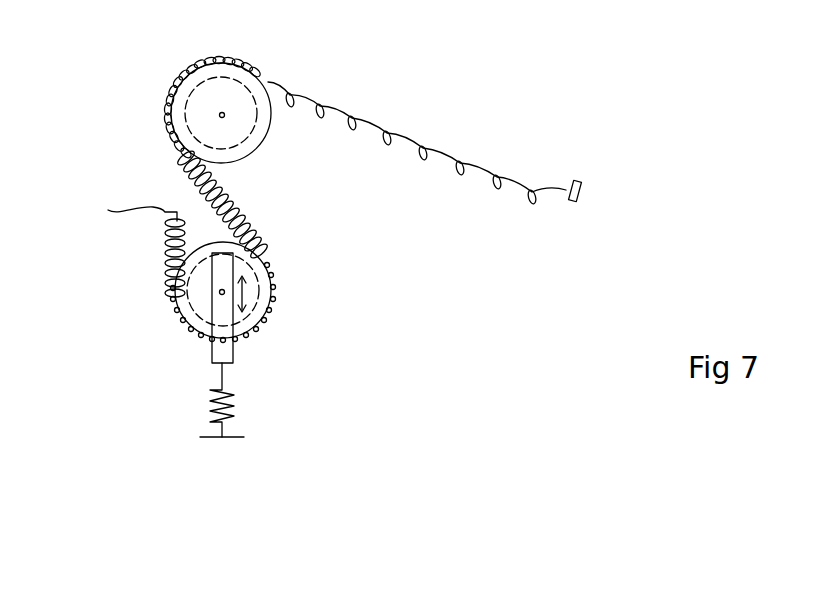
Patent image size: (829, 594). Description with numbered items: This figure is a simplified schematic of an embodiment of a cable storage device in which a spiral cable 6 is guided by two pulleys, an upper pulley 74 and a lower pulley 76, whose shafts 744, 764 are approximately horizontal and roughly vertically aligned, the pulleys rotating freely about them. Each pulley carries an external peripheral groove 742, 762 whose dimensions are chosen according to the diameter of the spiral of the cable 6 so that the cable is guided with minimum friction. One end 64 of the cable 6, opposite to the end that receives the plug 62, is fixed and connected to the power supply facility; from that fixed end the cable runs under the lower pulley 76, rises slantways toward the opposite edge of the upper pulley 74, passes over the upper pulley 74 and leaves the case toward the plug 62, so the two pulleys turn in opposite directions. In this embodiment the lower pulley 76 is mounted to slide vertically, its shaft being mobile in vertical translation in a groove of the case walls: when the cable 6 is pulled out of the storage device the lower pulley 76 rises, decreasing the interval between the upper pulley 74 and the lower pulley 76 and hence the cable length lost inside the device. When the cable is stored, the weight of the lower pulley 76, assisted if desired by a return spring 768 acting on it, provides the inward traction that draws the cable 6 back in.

The cable 6 is at (372, 118).
The plug 62 is at (583, 191).
The end of cable 64 is at (136, 241).
The upper pulley 74 is at (268, 76).
The external peripheral groove 742 is at (206, 118).
The shaft 744 is at (222, 115).
The lower pulley 76 is at (269, 268).
The external peripheral groove 762 is at (185, 296).
The shaft 764 is at (218, 293).
The return spring 768 is at (225, 400).